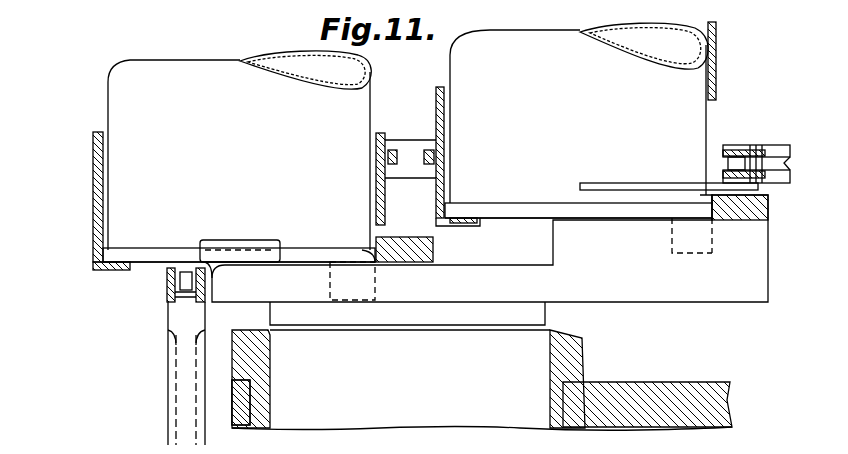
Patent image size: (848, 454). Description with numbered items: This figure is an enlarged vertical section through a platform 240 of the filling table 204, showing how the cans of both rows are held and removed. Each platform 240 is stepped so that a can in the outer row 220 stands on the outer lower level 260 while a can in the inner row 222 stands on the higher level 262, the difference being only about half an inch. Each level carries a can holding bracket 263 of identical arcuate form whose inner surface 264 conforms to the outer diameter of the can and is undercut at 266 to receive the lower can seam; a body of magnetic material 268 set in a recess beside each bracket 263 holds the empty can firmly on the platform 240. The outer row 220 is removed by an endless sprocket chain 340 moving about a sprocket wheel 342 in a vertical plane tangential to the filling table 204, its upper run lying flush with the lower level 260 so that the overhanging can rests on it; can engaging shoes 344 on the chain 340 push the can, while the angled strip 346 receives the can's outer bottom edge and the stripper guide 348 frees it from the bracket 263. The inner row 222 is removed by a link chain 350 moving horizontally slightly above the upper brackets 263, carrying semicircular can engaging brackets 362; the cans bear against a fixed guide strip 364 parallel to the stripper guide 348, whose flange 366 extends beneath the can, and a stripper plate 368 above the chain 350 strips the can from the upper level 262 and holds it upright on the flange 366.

The filling table 204 is at (236, 428).
The outer row 220 is at (307, 262).
The inner row 222 is at (640, 212).
The platform 240 is at (632, 296).
The lower level 260 is at (294, 262).
The upper level 262 is at (613, 217).
The can holding bracket 263 is at (434, 247).
The inner surface 264 is at (372, 254).
The undercut 266 is at (710, 222).
The body of magnetic material 268 is at (378, 284).
The endless sprocket chain 340 is at (170, 365).
The sprocket wheel 342 is at (170, 276).
The can engaging shoe 344 is at (240, 229).
The angled strip 346 is at (95, 236).
The stripper guide 348 is at (382, 220).
The link chain 350 is at (757, 147).
The can engaging bracket 362 is at (613, 182).
The fixed guide strip 364 is at (436, 126).
The flange 366 is at (466, 226).
The stripper plate 368 is at (717, 62).